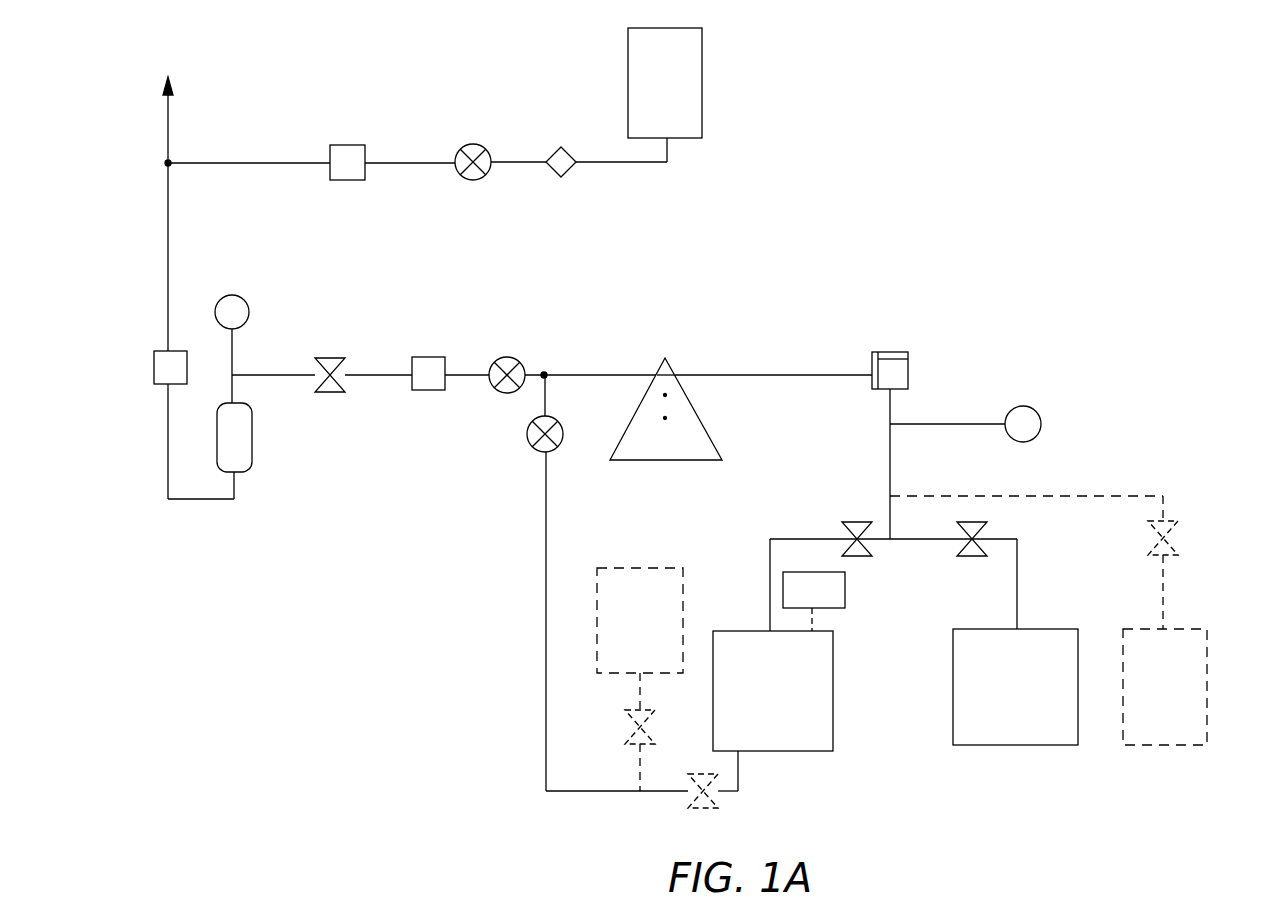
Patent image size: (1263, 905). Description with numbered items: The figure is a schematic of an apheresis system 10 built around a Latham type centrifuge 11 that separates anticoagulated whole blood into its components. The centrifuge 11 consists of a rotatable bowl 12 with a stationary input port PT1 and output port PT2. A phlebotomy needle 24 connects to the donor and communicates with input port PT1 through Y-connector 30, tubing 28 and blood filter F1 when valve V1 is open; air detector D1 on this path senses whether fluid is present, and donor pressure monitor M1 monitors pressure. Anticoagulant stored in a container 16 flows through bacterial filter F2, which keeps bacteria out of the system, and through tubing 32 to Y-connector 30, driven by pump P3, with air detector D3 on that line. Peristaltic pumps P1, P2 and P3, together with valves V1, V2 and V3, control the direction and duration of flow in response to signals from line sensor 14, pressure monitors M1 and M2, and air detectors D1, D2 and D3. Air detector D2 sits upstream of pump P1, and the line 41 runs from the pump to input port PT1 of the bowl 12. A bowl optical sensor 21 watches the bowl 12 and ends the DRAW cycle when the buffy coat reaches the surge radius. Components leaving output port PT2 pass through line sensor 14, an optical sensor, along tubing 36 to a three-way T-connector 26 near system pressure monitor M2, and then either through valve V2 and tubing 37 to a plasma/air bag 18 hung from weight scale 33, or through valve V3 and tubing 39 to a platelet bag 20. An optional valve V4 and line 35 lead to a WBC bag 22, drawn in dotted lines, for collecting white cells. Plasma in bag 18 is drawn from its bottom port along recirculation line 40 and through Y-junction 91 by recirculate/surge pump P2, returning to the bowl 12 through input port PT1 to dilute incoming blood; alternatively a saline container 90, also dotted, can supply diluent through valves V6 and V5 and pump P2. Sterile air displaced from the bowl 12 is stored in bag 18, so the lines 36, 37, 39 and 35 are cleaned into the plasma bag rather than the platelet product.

The apheresis system 10 is at (800, 192).
The centrifuge 11 is at (719, 436).
The rotatable bowl 12 is at (673, 461).
The line sensor 14 is at (893, 352).
The anticoagulant container 16 is at (703, 82).
The plasma/air bag 18 is at (795, 752).
The platelet bag 20 is at (1020, 746).
The bowl optical sensor 21 is at (690, 393).
The WBC bag 22 is at (1165, 746).
The phlebotomy needle 24 is at (166, 110).
The 3-way T-connector 26 is at (890, 424).
The tubing 28 is at (168, 432).
The Y-connector 30 is at (168, 163).
The tubing 32 is at (258, 165).
The weight scale 33 is at (845, 595).
The line 35 is at (1005, 496).
The tubing 36 is at (790, 372).
The tubing 37 is at (790, 539).
The tubing 39 is at (1000, 539).
The recirculation line 40 is at (546, 623).
The bowl inlet line 41 is at (589, 377).
The saline container 90 is at (655, 568).
The Y-junction 91 is at (546, 372).
The air detector D1 is at (154, 368).
The air detector D2 is at (423, 357).
The air detector D3 is at (349, 180).
The peristaltic pump P1 is at (491, 386).
The recirculate/surge pump P2 is at (528, 441).
The peristaltic pump P3 is at (473, 180).
The blood filter F1 is at (243, 473).
The bacterial filter F2 is at (566, 176).
The donor pressure monitor M1 is at (249, 312).
The system pressure monitor M2 is at (1041, 424).
The valve V1 is at (326, 357).
The valve V2 is at (858, 557).
The valve V3 is at (972, 557).
The valve V4 is at (1178, 540).
The valve V5 is at (690, 802).
The valve V6 is at (628, 712).
The input port PT1 is at (656, 371).
The output port PT2 is at (680, 372).